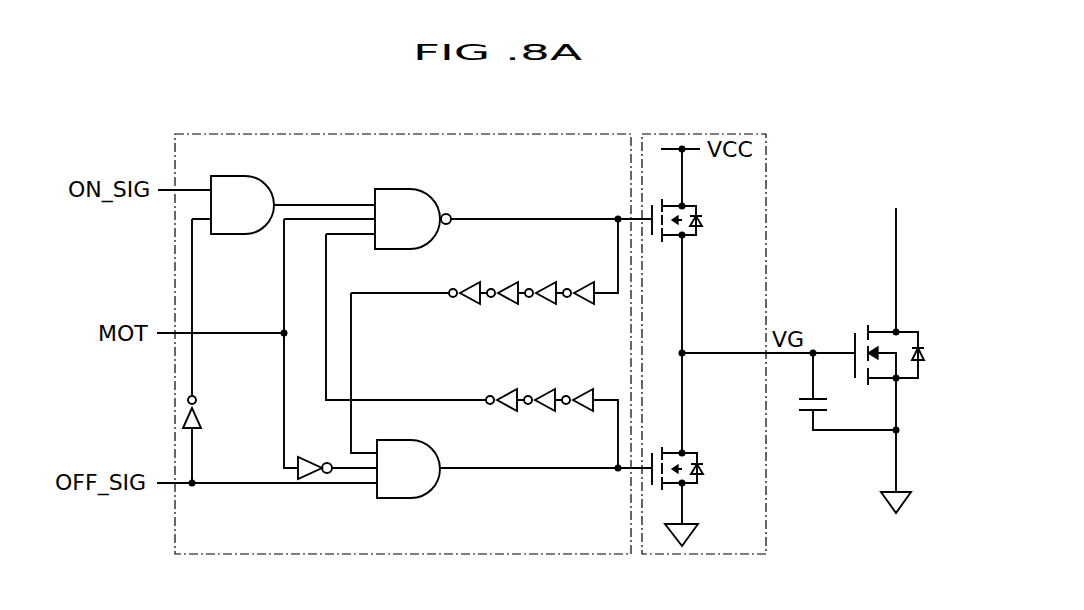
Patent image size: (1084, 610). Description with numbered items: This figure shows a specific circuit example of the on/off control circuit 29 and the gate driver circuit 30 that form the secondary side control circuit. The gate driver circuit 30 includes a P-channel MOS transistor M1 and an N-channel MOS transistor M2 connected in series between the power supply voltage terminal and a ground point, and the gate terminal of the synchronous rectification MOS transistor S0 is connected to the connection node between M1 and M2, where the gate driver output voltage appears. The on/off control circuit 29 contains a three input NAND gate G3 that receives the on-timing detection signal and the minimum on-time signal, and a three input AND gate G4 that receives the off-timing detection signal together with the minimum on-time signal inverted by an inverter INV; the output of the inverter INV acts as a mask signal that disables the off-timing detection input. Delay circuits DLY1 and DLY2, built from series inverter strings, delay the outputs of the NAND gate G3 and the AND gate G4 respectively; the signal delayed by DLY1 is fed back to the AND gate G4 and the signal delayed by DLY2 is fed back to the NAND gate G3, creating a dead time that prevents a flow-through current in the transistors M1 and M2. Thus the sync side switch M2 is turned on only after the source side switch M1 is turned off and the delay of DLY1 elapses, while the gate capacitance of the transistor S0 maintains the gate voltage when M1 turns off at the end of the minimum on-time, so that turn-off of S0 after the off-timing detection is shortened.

The on/off control circuit 29 is at (508, 134).
The gate driver circuit 30 is at (693, 134).
The three input NAND gate G3 is at (438, 203).
The three input AND gate G4 is at (438, 455).
The delay circuit DLY1 is at (597, 276).
The delay circuit DLY2 is at (485, 384).
The inverter INV is at (313, 456).
The P-channel MOS transistor M1 is at (687, 209).
The N-channel MOS transistor M2 is at (687, 457).
The synchronous rectification MOS transistor S0 is at (913, 320).